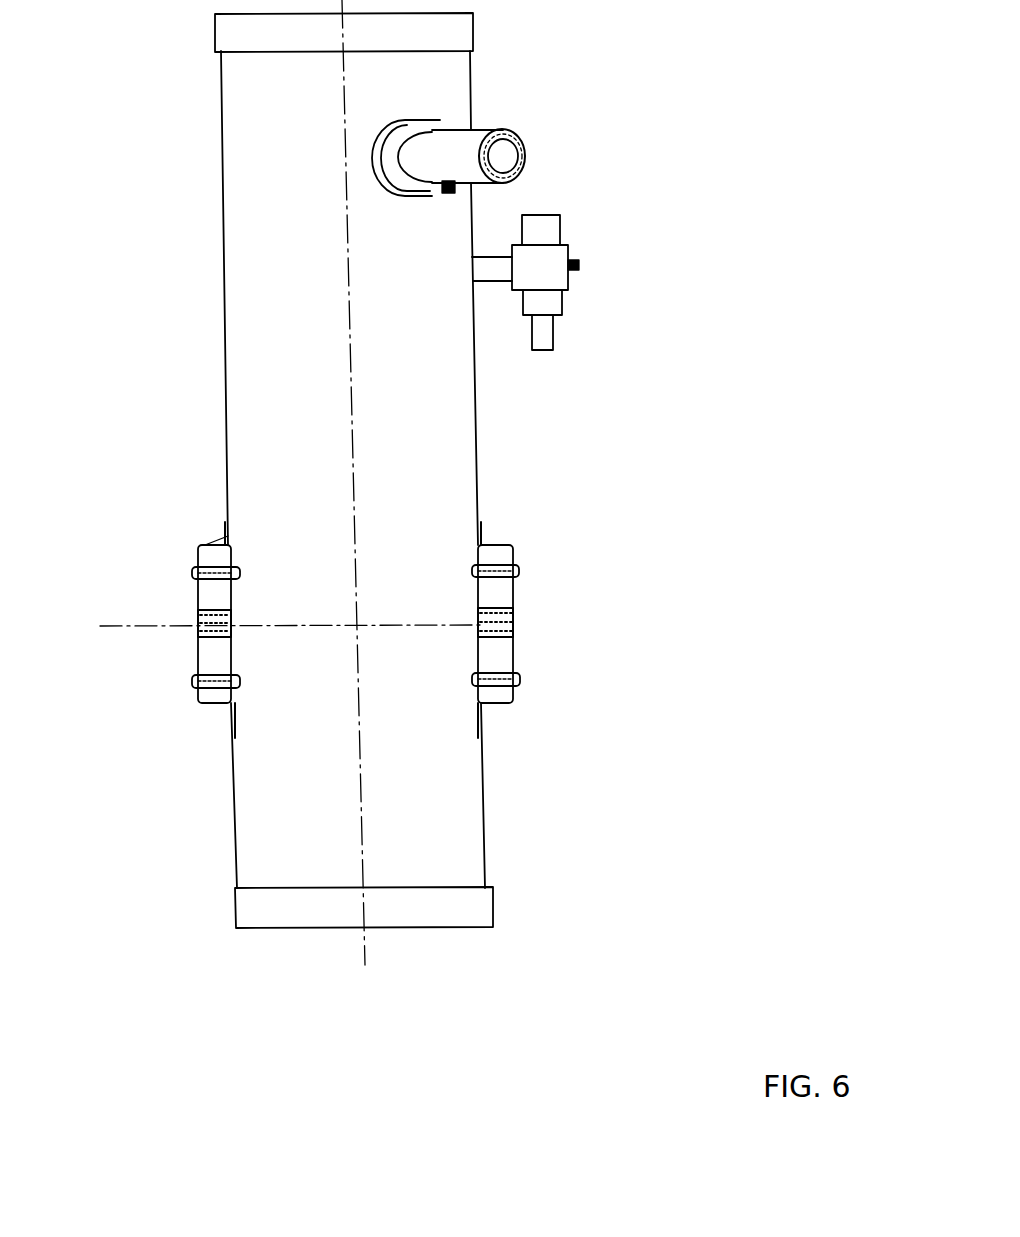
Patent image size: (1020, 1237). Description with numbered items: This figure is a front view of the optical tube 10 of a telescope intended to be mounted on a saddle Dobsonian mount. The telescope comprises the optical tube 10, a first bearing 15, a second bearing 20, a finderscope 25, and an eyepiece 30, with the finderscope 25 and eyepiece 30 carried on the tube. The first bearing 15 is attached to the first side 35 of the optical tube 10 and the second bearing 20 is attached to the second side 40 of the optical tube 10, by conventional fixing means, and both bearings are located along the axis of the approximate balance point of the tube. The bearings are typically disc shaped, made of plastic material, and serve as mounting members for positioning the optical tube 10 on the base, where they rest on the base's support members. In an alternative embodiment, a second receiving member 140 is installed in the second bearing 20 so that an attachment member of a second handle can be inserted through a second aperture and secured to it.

The optical tube 10 is at (463, 77).
The second side 40 is at (225, 463).
The first side 35 is at (473, 498).
The second bearing 20 is at (197, 595).
The first bearing 15 is at (515, 587).
The second receiving member 140 is at (197, 628).
The eyepiece 30 is at (527, 152).
The finderscope 25 is at (568, 245).